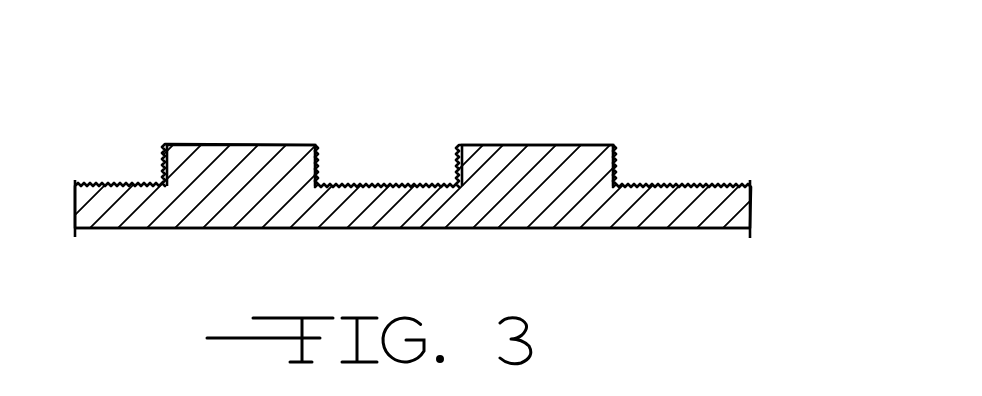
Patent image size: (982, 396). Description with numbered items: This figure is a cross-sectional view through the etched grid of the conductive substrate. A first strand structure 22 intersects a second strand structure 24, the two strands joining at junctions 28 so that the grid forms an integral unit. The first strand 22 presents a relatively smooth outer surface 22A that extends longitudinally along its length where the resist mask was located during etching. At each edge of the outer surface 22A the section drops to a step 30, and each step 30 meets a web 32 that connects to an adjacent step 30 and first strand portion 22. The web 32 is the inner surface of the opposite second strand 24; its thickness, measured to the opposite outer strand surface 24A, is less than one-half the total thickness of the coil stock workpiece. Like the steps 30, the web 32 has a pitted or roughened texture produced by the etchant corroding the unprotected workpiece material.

The first strand structure 22 is at (247, 145).
The outer surface 22A is at (572, 145).
The second strand structure 24 is at (637, 228).
The outer strand surface 24A is at (583, 228).
The junction 28 is at (193, 196).
The step 30 is at (316, 184).
The web 32 is at (362, 200).